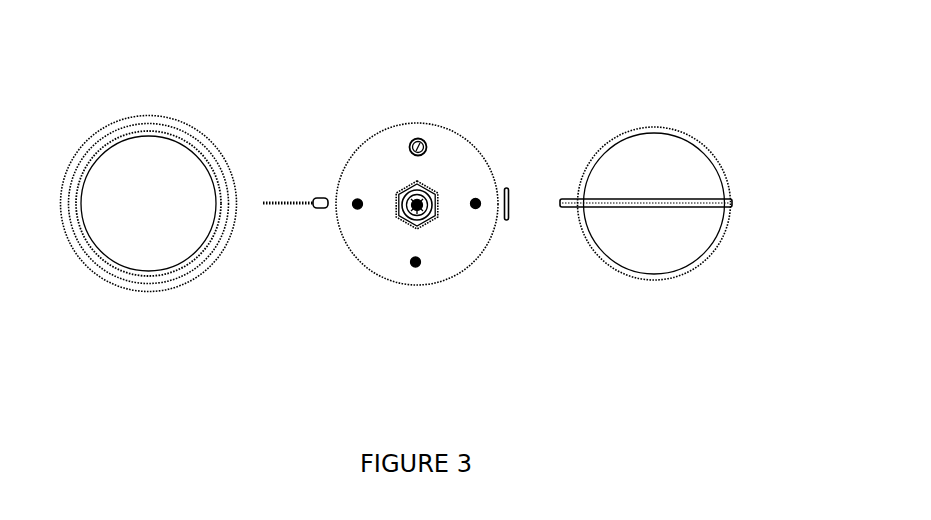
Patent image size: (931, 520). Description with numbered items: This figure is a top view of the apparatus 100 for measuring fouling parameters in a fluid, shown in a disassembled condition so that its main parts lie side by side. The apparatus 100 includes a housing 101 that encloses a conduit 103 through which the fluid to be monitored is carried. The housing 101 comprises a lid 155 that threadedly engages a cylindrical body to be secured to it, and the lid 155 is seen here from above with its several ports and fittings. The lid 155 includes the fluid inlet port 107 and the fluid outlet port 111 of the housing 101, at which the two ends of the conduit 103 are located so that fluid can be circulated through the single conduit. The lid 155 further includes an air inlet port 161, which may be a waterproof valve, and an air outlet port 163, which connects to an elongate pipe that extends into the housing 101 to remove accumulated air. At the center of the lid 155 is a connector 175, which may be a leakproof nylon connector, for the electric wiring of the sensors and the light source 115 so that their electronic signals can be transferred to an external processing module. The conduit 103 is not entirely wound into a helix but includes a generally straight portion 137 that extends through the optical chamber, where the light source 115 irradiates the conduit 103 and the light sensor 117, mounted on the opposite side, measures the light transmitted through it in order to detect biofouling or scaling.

The apparatus 100 is at (157, 70).
The housing 101 is at (353, 257).
The conduit 103 is at (672, 130).
The fluid inlet port 107 is at (477, 207).
The fluid outlet port 111 is at (358, 200).
The light source 115 is at (313, 197).
The light sensor 117 is at (510, 210).
The straight portion 137 is at (697, 205).
The lid 155 is at (443, 152).
The air inlet port 161 is at (418, 139).
The air outlet port 163 is at (413, 266).
The connector 175 is at (402, 187).